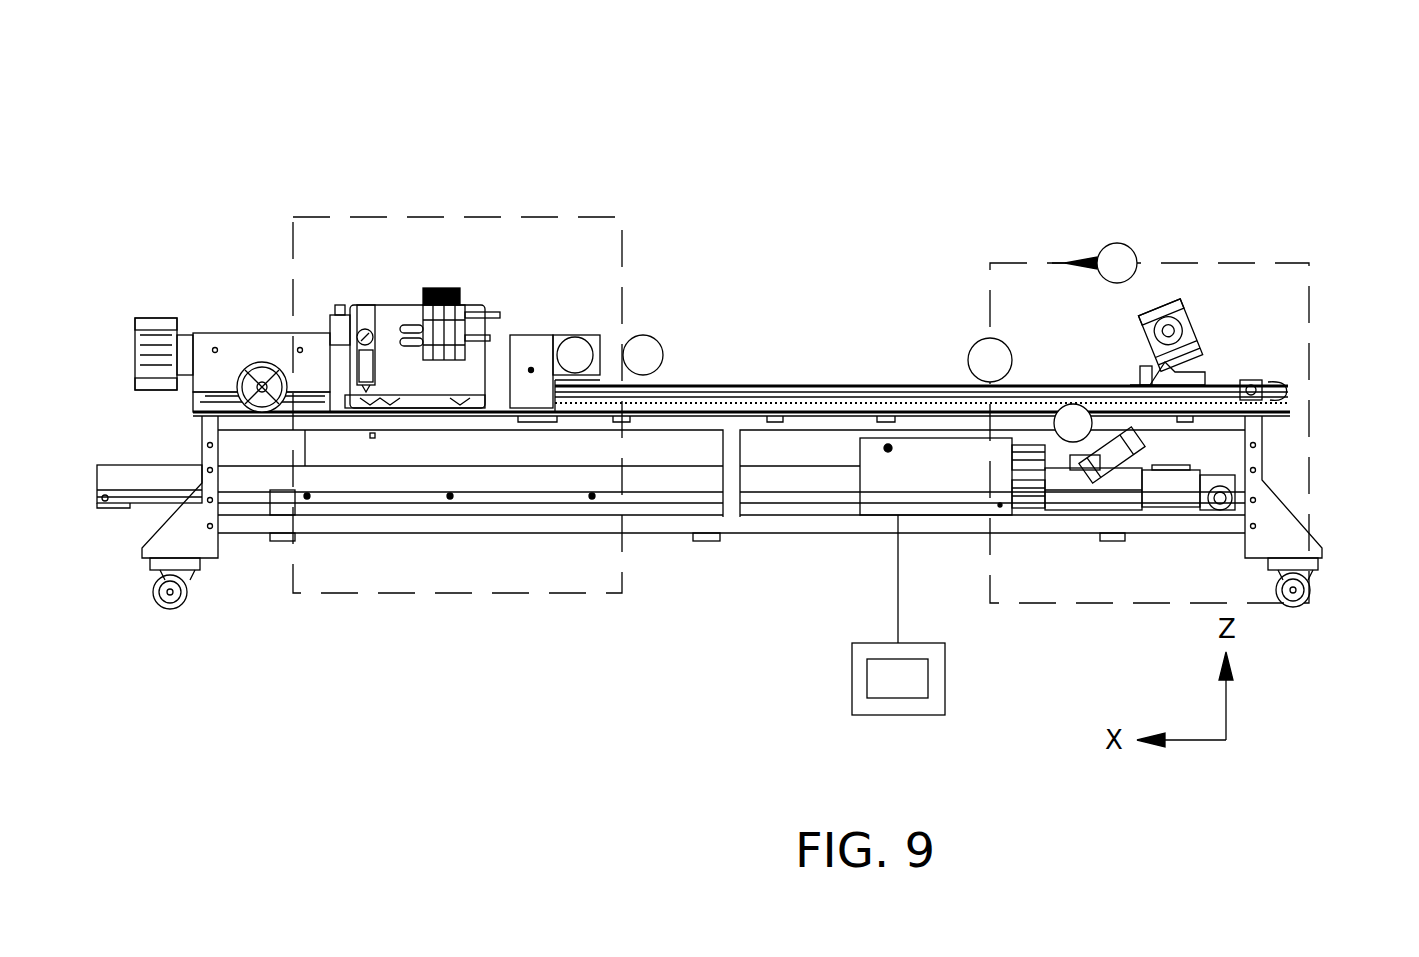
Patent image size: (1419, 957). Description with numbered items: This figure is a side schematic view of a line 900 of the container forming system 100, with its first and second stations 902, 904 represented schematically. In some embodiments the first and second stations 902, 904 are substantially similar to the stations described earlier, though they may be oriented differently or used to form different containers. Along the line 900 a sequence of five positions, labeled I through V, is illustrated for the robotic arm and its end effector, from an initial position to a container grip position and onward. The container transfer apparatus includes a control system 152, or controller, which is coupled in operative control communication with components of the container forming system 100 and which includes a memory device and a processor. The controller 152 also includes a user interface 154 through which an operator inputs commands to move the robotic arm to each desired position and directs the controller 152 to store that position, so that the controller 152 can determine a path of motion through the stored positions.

The container forming system 100 is at (754, 347).
The line 900 is at (1325, 455).
The first station 902 is at (1153, 260).
The second station 904 is at (540, 217).
The control system 152 is at (862, 642).
The user interface 154 is at (905, 698).